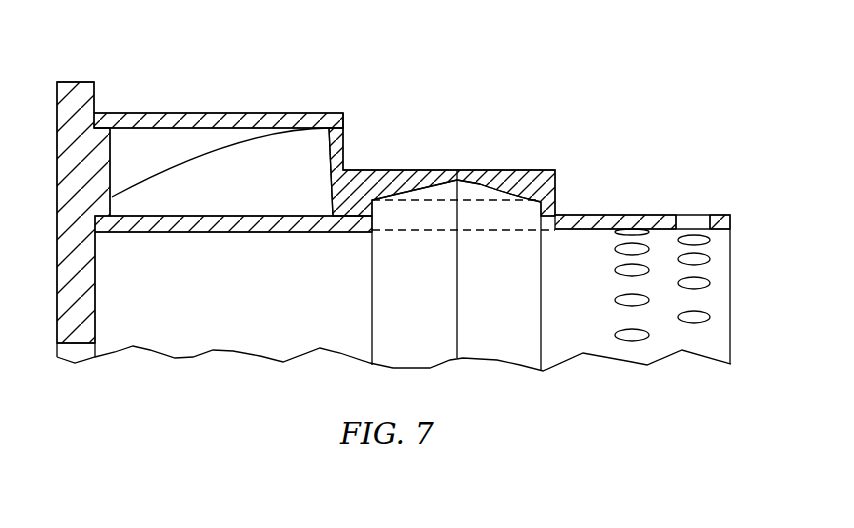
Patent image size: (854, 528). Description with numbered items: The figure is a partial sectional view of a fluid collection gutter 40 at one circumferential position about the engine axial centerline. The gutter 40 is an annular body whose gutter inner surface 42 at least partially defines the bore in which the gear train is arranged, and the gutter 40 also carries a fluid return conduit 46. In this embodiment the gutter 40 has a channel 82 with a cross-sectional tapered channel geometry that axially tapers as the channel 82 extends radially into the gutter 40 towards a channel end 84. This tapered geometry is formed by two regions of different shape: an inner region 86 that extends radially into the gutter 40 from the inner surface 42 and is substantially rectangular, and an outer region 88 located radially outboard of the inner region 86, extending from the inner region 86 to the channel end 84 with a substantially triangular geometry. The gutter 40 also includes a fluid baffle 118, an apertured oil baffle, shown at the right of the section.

The fluid collection gutter 40 is at (632, 106).
The gutter inner surface 42 is at (187, 233).
The fluid return conduit 46 is at (264, 152).
The channel 82 is at (412, 236).
The channel end 84 is at (457, 176).
The inner region 86 is at (560, 212).
The outer region 88 is at (478, 196).
The fluid baffle 118 is at (718, 214).